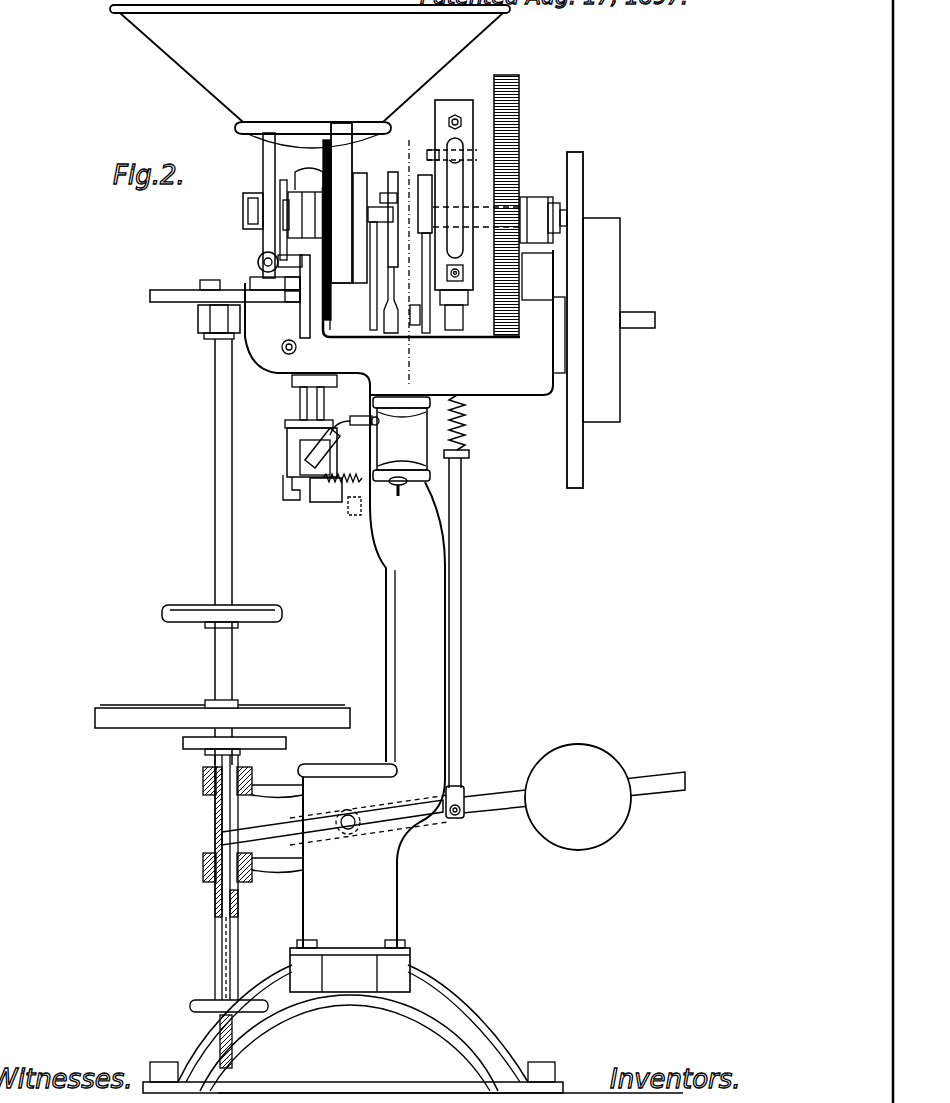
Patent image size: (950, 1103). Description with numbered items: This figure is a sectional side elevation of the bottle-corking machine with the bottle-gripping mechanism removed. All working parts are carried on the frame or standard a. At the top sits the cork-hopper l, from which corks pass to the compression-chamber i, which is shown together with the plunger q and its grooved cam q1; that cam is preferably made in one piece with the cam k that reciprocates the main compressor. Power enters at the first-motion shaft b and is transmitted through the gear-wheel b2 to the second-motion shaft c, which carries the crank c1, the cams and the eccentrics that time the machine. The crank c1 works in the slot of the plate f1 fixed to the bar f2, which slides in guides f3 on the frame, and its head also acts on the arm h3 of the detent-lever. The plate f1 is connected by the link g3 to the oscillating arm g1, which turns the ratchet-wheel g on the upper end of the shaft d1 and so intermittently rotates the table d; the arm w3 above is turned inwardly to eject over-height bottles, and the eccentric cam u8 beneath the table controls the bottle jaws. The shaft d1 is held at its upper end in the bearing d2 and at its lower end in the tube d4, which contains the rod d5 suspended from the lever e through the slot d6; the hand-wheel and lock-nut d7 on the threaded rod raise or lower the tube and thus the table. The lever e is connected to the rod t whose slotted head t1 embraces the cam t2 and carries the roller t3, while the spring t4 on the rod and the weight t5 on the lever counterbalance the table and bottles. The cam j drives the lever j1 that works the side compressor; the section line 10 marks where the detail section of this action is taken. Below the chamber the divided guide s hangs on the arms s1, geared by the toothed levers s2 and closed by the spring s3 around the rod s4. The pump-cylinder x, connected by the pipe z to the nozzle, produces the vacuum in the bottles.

The cork-hopper l is at (310, 76).
The frame or standard a is at (353, 640).
The grooved cam q1 is at (343, 128).
The cam k is at (360, 268).
The plate f1 is at (268, 178).
The arm of detent-lever h3 is at (284, 185).
The crank c1 is at (260, 220).
The bar f2 is at (258, 261).
The guides f3 is at (282, 262).
The second-motion shaft c is at (374, 208).
The section line 10 10 is at (410, 258).
The cam j is at (424, 184).
The lever j1 is at (418, 330).
The roller t3 is at (458, 150).
The cam t2 is at (455, 186).
The slotted head t1 is at (446, 256).
The gear-wheel b2 is at (510, 143).
The first-motion shaft b is at (636, 314).
The ratchet-wheel g is at (152, 296).
The bearing d2 is at (200, 333).
The oscillating arm g1 is at (246, 300).
The link g3 is at (268, 300).
The shaft d1 is at (214, 540).
The inwardly turned end of arm w3 is at (280, 614).
The table or platform d is at (345, 718).
The eccentric cam u8 is at (286, 744).
The tube d4 is at (208, 830).
The slot d6 is at (232, 816).
The rod d5 is at (232, 904).
The hand-wheel and lock-nut d7 is at (200, 1010).
The lever e is at (424, 822).
The weight t5 is at (574, 797).
The rod t is at (456, 646).
The spring t4 is at (468, 436).
The pump-cylinder x is at (401, 439).
The rod s4 is at (382, 492).
The plunger q is at (304, 405).
The pipe z is at (342, 420).
The compression-chamber i is at (300, 448).
The toothed levers s2 is at (322, 440).
The arms s1 is at (298, 476).
The divided guide s is at (320, 500).
The spring s3 is at (348, 502).